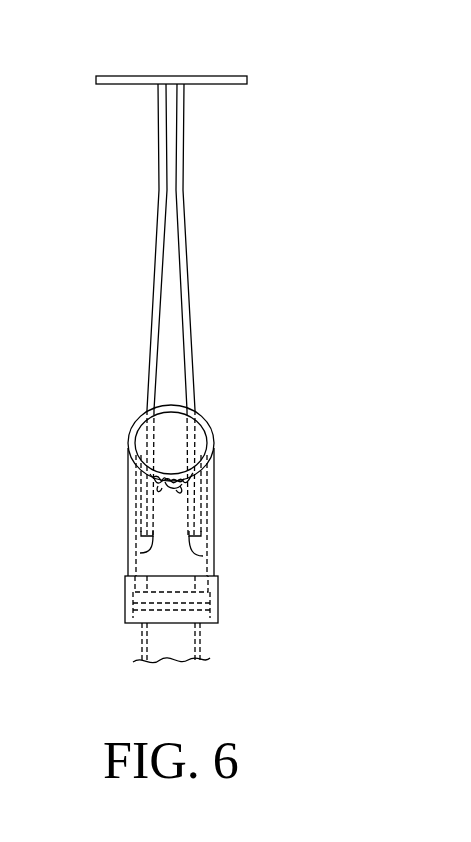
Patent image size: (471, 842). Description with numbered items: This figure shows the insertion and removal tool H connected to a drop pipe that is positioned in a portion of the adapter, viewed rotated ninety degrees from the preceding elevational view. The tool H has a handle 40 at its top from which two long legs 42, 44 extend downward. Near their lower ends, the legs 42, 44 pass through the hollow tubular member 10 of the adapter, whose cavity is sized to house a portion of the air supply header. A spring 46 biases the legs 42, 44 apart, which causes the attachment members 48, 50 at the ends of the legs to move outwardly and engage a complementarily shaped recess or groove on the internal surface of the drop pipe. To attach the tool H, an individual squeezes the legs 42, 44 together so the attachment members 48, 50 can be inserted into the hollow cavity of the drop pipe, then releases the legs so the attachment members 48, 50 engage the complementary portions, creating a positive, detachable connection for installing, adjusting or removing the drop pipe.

The handle 40 is at (97, 86).
The insertion and removal tool H is at (212, 204).
The leg 42 is at (158, 272).
The leg 44 is at (186, 287).
The hollow tubular member 10 is at (130, 436).
The spring 46 is at (178, 490).
The attachment member 48 is at (140, 552).
The attachment member 50 is at (208, 556).